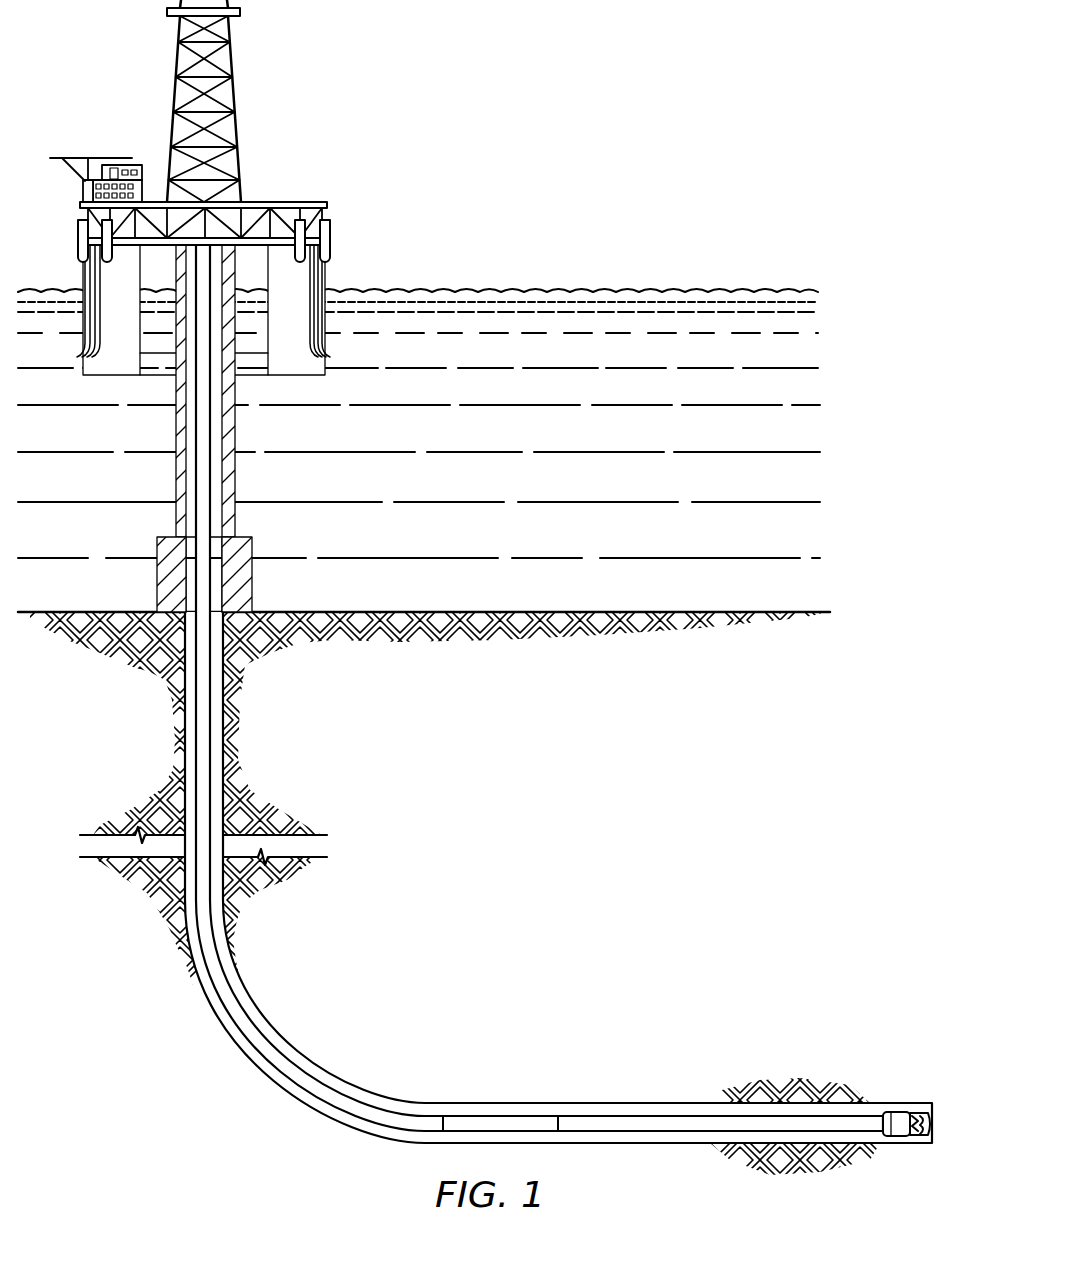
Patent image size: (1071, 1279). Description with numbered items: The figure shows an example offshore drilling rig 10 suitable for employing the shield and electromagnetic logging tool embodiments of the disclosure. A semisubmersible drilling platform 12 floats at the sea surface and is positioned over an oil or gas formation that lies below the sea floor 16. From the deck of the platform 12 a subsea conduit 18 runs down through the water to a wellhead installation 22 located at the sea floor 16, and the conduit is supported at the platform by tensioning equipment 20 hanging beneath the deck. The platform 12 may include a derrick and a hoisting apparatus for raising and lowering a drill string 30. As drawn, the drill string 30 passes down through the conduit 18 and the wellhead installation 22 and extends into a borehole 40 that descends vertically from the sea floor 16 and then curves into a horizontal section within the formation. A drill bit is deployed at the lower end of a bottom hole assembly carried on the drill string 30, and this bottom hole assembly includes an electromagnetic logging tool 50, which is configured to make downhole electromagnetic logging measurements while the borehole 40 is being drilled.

The drilling rig 10 is at (475, 587).
The semisubmersible drilling platform 12 is at (490, 568).
The sea floor 16 is at (480, 612).
The riser 18 is at (233, 476).
The riser tensioners 20 is at (330, 240).
The wellhead installation 22 is at (240, 537).
The drill string 30 is at (204, 396).
The borehole 40 is at (183, 742).
The electromagnetic logging tool 50 is at (498, 1122).